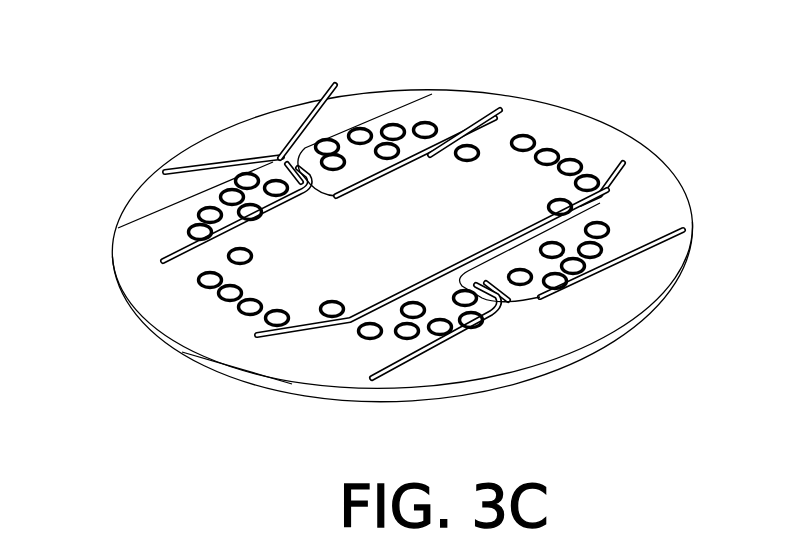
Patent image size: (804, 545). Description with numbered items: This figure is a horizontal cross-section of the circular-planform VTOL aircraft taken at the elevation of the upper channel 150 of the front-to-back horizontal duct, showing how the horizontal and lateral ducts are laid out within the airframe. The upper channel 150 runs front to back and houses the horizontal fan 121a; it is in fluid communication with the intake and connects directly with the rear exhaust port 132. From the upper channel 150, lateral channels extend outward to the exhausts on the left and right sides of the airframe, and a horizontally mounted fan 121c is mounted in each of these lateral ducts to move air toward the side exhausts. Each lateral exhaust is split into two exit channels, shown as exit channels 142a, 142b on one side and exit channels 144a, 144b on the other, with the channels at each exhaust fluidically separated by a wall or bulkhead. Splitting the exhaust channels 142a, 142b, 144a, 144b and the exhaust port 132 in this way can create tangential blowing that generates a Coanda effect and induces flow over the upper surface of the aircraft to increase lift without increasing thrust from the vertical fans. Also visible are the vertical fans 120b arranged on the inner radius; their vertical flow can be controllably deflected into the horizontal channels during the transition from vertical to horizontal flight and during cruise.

The exhaust port 132 is at (545, 113).
The exit channel 144a is at (305, 118).
The exit channel 144b is at (145, 188).
The horizontal fan 121a is at (455, 137).
The horizontally mounted fan 121c is at (320, 137).
The upper channel 150 is at (382, 173).
The exit channel 142a is at (650, 275).
The exit channel 142b is at (470, 357).
The vertical fans 120b is at (254, 252).